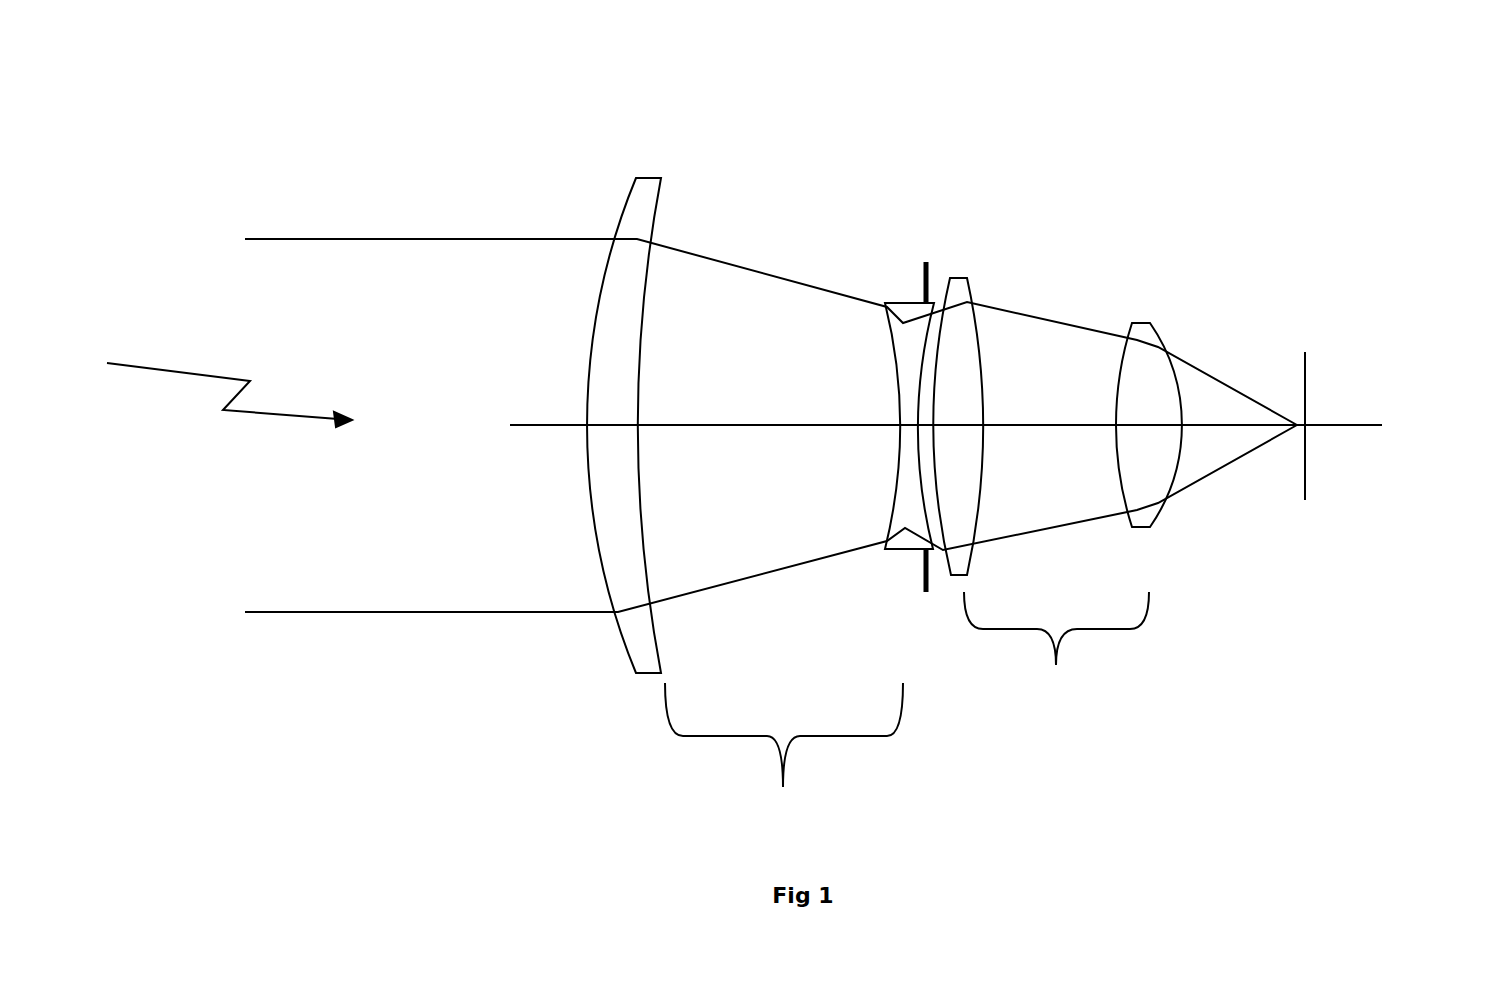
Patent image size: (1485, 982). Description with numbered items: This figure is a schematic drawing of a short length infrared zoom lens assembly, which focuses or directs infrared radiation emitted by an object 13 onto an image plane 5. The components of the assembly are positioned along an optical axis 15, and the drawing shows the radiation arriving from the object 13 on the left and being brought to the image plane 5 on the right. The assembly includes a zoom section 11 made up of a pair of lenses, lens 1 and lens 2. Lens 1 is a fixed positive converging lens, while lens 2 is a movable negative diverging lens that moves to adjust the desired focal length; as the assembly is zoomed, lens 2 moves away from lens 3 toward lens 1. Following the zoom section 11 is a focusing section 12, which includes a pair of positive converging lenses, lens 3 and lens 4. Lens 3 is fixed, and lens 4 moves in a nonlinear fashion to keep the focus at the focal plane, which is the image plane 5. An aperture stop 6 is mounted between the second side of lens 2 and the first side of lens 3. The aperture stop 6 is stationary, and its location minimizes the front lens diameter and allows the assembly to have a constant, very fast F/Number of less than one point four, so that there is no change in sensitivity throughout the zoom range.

The lens 1 is at (655, 175).
The lens 2 is at (885, 302).
The lens 3 is at (977, 283).
The lens 4 is at (1122, 310).
The image plane 5 is at (1315, 367).
The aperture stop 6 is at (926, 262).
The zoom section 11 is at (784, 758).
The focusing section 12 is at (1056, 654).
The object 13 is at (229, 375).
The optical axis 15 is at (1352, 432).